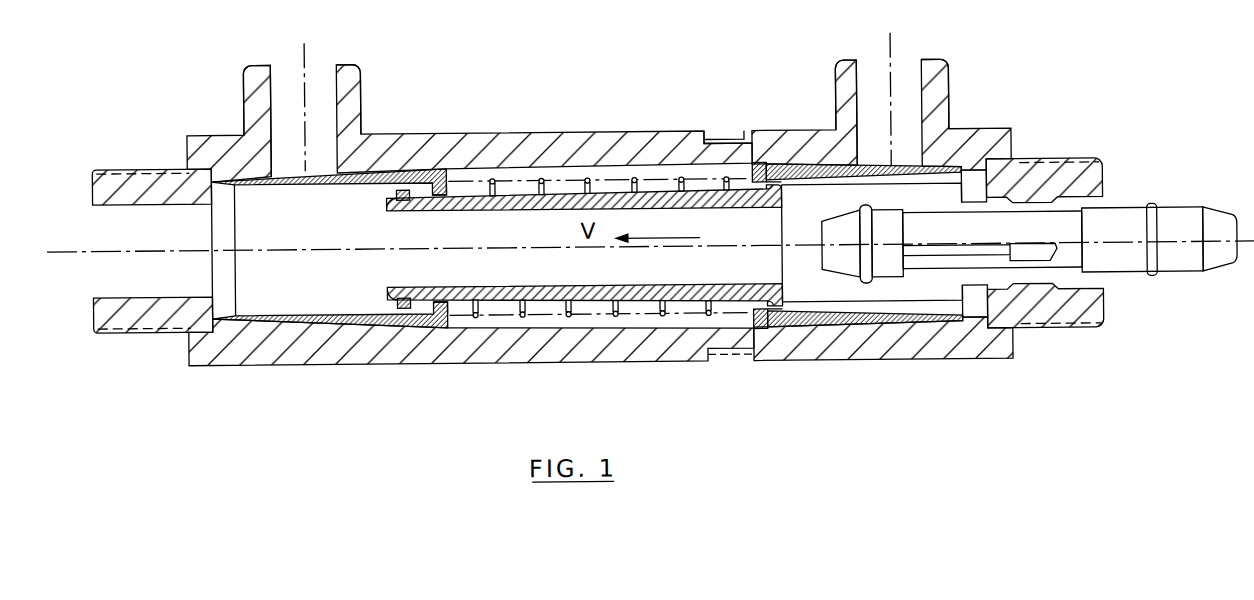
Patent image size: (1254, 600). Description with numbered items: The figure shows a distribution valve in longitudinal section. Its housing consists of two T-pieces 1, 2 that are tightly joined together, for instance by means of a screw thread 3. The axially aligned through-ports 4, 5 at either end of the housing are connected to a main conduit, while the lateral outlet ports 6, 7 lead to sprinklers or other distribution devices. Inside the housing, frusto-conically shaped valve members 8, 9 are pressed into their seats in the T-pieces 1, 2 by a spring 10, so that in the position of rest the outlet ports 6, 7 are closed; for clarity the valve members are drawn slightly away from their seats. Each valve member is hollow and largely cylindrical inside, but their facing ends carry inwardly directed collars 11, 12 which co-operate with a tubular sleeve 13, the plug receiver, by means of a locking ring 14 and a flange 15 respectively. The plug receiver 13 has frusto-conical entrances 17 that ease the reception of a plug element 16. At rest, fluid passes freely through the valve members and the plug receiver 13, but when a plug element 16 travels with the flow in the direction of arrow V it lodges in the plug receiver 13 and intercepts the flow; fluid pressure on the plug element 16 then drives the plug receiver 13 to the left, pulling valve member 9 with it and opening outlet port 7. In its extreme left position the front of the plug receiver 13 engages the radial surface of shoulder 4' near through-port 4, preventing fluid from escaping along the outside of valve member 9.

The T-piece 1 is at (515, 132).
The T-piece 2 is at (790, 141).
The screw thread 3 is at (730, 140).
The through-port 4 is at (152, 222).
The shoulder 4' is at (150, 212).
The through-port 5 is at (1075, 171).
The lateral outlet port 6 is at (258, 88).
The lateral outlet port 7 is at (940, 95).
The valve member 8 is at (345, 329).
The valve member 9 is at (850, 329).
The spring 10 is at (613, 300).
The collar 11 is at (462, 318).
The collar 12 is at (757, 324).
The tubular sleeve 13 is at (545, 296).
The locking ring 14 is at (412, 306).
The flange 15 is at (773, 294).
The plug element 16 is at (1176, 270).
The frusto-conical shaped entrance 17 is at (385, 290).